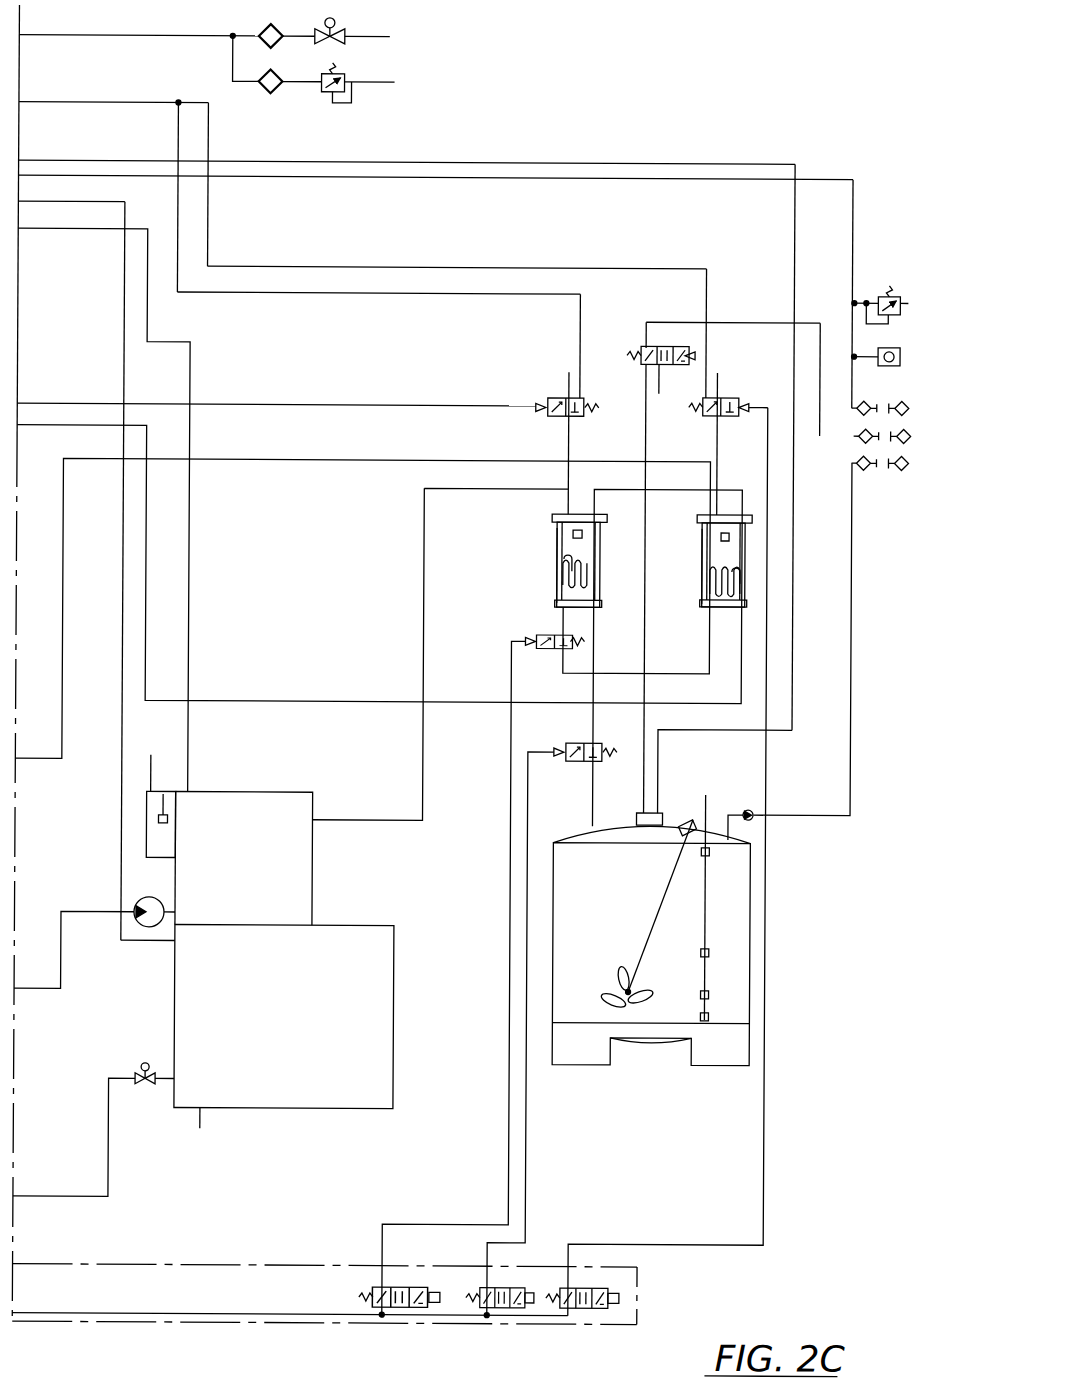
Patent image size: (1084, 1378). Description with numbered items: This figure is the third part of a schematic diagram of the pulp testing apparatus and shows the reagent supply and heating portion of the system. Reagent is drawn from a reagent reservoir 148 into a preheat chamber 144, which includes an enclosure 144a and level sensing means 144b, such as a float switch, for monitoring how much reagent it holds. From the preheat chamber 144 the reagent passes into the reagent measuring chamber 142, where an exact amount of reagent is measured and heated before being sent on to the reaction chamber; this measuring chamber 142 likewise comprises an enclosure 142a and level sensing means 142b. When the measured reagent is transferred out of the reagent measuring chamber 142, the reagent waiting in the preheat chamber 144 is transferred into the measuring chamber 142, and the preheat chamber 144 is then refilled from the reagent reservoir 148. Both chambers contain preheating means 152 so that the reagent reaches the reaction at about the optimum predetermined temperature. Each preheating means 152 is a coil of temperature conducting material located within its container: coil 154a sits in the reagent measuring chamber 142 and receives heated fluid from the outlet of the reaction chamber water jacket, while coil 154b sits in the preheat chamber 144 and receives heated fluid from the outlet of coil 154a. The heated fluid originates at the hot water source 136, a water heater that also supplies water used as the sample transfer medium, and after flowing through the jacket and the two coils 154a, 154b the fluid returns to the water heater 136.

The hot water source 136 is at (406, 891).
The reagent measuring chamber 142 is at (705, 597).
The enclosure 142a is at (706, 552).
The level sensing means 142b is at (721, 534).
The preheat chamber 144 is at (556, 597).
The enclosure 144a is at (556, 539).
The level sensing means 144b is at (575, 529).
The reagent reservoir 148 is at (584, 835).
The preheating means 152 is at (560, 574).
The coil 154a is at (743, 573).
The coil 154b is at (571, 560).